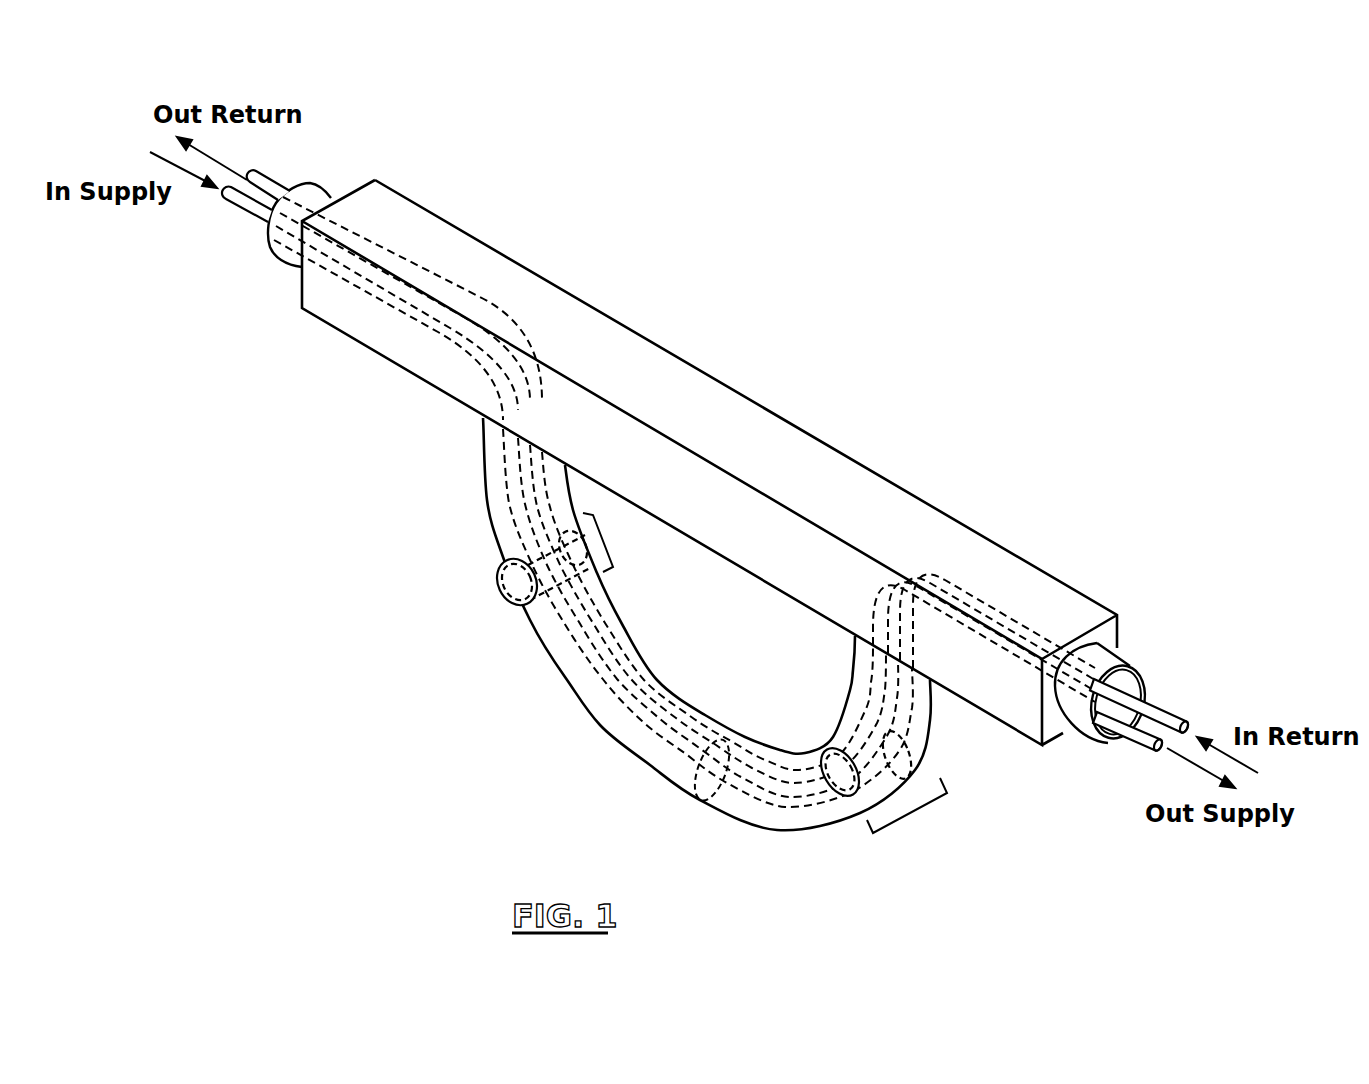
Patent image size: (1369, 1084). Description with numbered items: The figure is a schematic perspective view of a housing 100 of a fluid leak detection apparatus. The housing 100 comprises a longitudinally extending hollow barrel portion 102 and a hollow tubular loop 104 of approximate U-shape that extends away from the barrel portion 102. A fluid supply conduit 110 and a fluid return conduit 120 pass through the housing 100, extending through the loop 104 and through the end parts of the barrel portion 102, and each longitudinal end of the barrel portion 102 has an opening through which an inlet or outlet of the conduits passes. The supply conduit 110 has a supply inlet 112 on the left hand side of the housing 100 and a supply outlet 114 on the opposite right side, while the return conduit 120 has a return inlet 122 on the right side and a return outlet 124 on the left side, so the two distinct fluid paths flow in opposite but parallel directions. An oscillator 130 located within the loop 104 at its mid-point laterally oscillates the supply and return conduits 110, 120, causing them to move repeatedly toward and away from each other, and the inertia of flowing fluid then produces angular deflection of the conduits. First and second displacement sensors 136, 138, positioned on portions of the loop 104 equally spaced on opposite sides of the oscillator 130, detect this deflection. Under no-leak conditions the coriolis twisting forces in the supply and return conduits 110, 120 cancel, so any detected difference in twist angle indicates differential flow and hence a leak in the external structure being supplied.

The housing 100 is at (763, 447).
The barrel portion 102 is at (900, 533).
The loop 104 is at (558, 673).
The fluid supply conduit 110 is at (490, 363).
The supply inlet 112 is at (252, 213).
The supply outlet 114 is at (1140, 740).
The fluid return conduit 120 is at (483, 305).
The return inlet 122 is at (1157, 708).
The return outlet 124 is at (277, 182).
The oscillator 130 is at (713, 733).
The first displacement sensor 136 is at (608, 533).
The second displacement sensor 138 is at (913, 813).